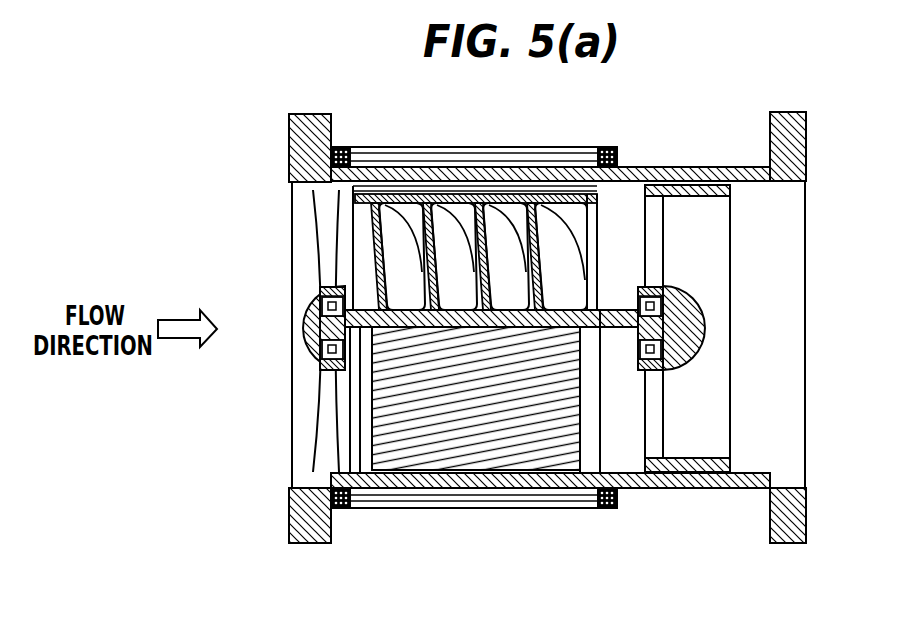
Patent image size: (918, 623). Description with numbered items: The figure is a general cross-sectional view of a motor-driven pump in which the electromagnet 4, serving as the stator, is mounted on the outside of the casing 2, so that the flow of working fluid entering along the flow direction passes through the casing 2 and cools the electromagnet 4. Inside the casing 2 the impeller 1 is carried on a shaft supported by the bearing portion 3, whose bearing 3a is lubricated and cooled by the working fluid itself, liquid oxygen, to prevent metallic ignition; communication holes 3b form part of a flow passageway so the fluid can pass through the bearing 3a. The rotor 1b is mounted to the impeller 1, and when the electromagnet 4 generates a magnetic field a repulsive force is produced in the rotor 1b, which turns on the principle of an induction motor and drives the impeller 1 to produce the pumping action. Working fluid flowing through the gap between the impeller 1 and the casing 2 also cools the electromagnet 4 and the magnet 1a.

The impeller 1 is at (512, 245).
The magnet 1a is at (518, 238).
The rotor 1b is at (443, 450).
The casing 2 is at (290, 137).
The bearing portion 3 is at (688, 372).
The bearing 3a is at (670, 285).
The communication hole 3b is at (698, 305).
The electromagnet 4 is at (382, 147).